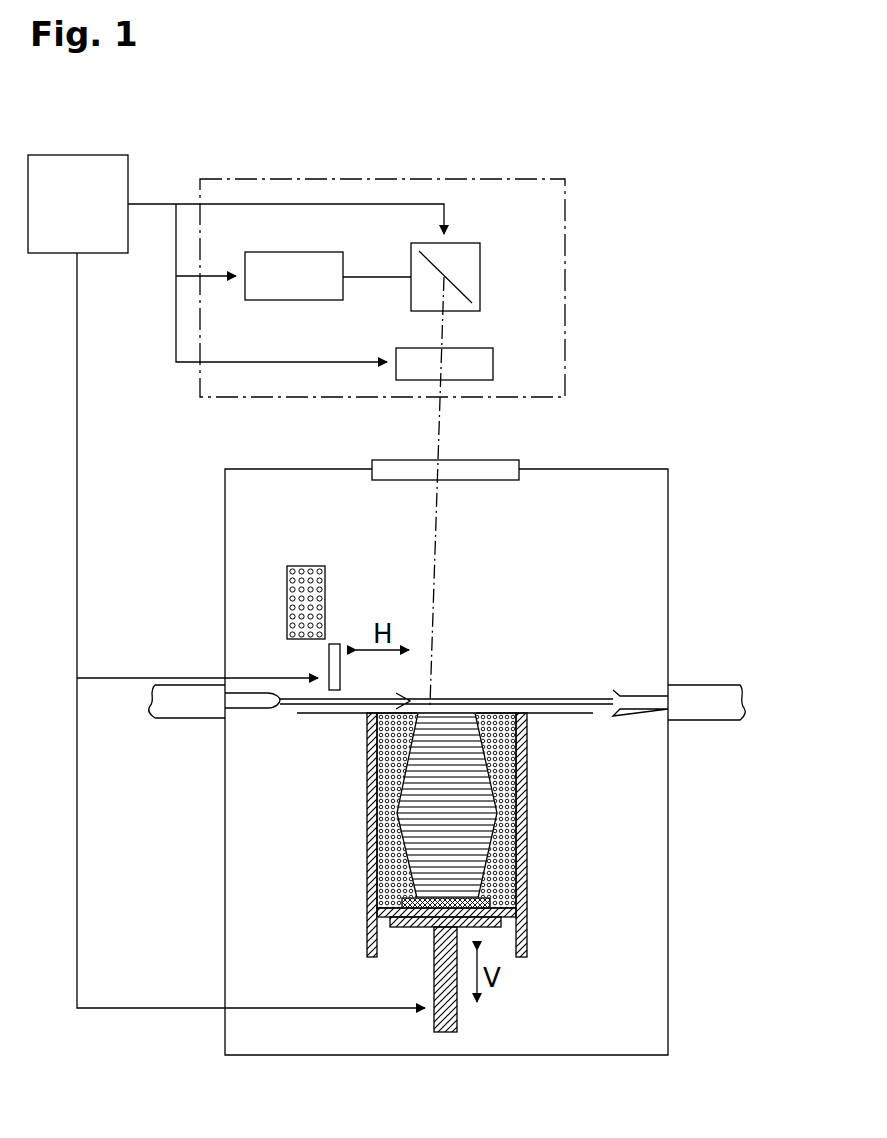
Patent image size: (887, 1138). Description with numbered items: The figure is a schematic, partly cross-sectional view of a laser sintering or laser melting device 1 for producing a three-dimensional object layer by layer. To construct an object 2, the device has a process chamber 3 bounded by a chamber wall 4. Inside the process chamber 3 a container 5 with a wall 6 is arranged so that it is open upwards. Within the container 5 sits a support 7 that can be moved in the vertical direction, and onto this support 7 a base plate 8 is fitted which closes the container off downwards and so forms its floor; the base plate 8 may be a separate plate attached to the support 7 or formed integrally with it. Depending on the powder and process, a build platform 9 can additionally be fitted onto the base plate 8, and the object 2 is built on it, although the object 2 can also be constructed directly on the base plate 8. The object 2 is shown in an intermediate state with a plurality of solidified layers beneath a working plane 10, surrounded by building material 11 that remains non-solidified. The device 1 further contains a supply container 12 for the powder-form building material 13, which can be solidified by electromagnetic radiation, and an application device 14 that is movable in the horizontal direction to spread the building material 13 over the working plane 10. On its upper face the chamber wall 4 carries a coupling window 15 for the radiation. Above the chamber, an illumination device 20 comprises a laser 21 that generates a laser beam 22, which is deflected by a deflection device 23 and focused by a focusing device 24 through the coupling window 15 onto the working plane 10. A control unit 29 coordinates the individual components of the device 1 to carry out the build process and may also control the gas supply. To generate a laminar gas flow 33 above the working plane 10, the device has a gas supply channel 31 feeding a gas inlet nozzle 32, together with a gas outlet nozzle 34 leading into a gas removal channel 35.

The laser sintering device 1 is at (597, 150).
The object 2 is at (463, 767).
The process chamber 3 is at (315, 490).
The chamber wall 4 is at (260, 469).
The container 5 is at (447, 835).
The wall 6 is at (527, 832).
The support 7 is at (413, 927).
The base plate 8 is at (377, 912).
The build platform 9 is at (403, 901).
The working plane 10 is at (500, 713).
The building material 11 is at (370, 774).
The supply container 12 is at (307, 565).
The building material 13 is at (324, 602).
The application device 14 is at (330, 664).
The coupling window 15 is at (490, 472).
The illumination device 20 is at (566, 290).
The laser 21 is at (302, 285).
The laser beam 22 is at (358, 276).
The deflection device 23 is at (460, 255).
The focusing device 24 is at (475, 358).
The control unit 29 is at (92, 216).
The gas supply channel 31 is at (168, 707).
The gas inlet nozzle 32 is at (239, 701).
The laminar gas flow 33 is at (465, 698).
The gas outlet nozzle 34 is at (630, 700).
The gas removal channel 35 is at (710, 702).